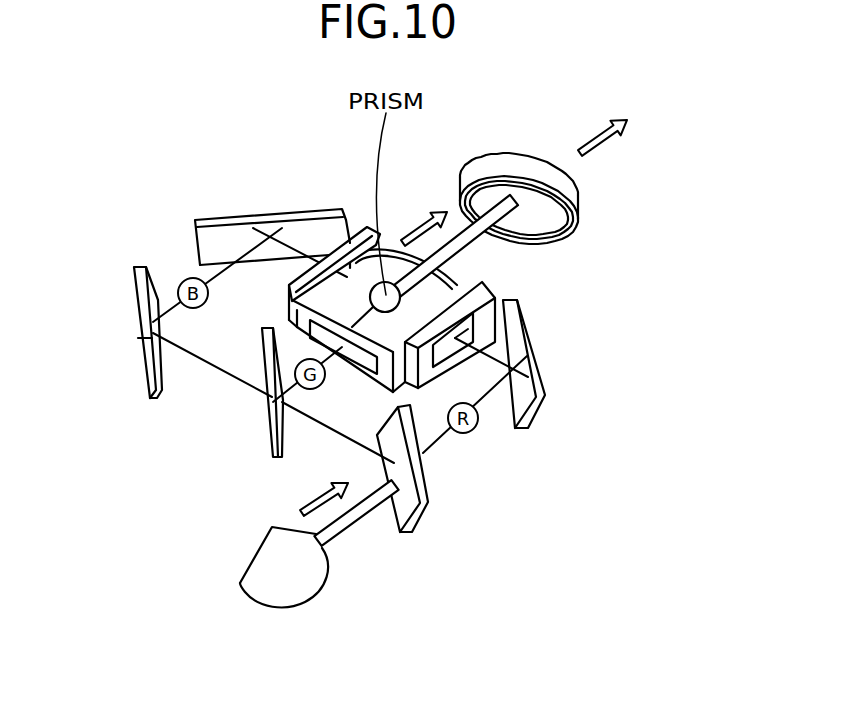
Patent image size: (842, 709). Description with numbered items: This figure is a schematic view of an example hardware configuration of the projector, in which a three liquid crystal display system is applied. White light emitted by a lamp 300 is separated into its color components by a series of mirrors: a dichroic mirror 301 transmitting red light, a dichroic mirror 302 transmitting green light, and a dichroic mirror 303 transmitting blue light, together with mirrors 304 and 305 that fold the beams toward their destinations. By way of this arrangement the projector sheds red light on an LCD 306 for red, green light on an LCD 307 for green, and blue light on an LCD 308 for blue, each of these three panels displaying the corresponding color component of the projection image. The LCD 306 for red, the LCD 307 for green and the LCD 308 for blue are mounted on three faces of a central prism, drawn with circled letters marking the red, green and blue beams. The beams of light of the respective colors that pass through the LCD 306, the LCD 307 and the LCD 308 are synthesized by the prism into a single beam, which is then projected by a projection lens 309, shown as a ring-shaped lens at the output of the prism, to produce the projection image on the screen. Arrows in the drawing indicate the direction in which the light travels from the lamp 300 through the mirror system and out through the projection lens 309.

The lamp 300 is at (275, 593).
The dichroic mirror transmitting red light 301 is at (405, 534).
The dichroic mirror transmitting green light 302 is at (272, 449).
The dichroic mirror transmitting blue light 303 is at (140, 378).
The mirror 304 is at (537, 414).
The mirror 305 is at (221, 219).
The LCD for red 306 is at (470, 322).
The LCD for green 307 is at (318, 333).
The LCD for blue 308 is at (347, 262).
The projection lens 309 is at (568, 216).